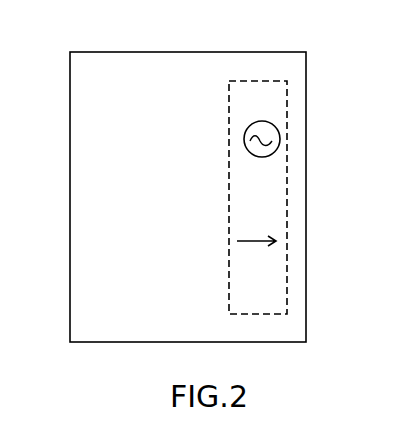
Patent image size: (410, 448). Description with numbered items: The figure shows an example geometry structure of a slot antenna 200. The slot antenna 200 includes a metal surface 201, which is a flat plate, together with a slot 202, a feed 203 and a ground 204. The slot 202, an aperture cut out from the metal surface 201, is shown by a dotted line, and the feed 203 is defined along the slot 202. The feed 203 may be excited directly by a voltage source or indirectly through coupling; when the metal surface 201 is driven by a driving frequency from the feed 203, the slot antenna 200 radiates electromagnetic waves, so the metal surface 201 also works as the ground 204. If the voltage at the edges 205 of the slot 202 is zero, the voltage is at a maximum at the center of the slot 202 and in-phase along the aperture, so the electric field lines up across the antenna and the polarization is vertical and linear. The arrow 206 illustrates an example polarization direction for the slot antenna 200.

The slot antenna 200 is at (100, 42).
The metal surface 201 is at (101, 153).
The slot 202 is at (275, 170).
The feed 203 is at (278, 126).
The ground 204 is at (285, 327).
The edges 205 is at (285, 258).
The arrow 206 is at (265, 223).